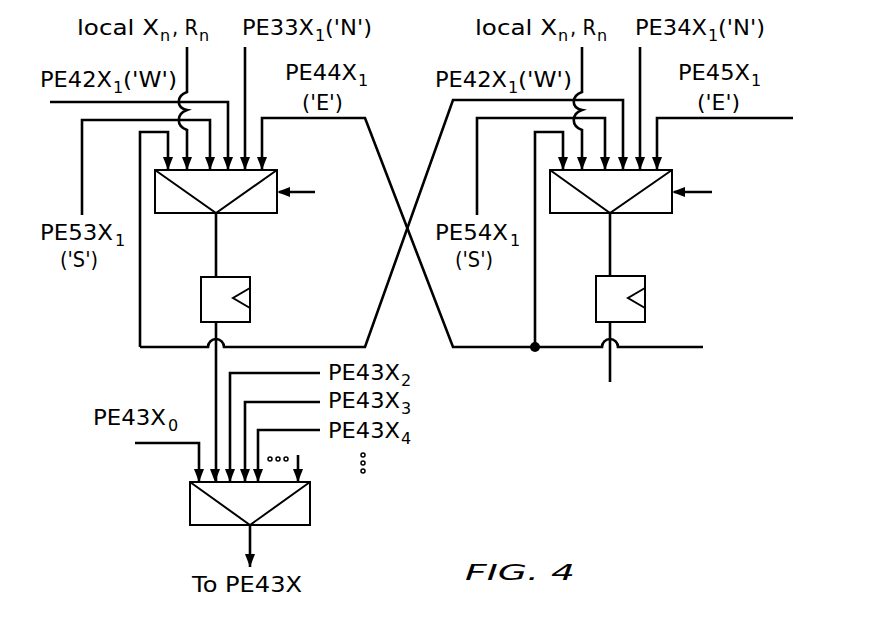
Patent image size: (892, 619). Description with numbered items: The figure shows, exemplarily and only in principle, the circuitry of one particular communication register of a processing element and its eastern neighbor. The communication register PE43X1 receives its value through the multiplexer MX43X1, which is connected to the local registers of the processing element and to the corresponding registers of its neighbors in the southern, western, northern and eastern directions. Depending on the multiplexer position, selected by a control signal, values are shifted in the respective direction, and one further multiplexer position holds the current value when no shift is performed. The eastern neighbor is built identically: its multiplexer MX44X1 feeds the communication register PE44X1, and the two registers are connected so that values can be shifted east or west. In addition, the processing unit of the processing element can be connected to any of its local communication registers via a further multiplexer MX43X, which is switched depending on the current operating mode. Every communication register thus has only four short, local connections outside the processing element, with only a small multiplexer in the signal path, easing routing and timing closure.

The multiplexer MX43X1 is at (270, 223).
The communication register PE43X1 is at (271, 299).
The multiplexer MX44X1 is at (666, 223).
The communication register PE44X1 is at (666, 299).
The further multiplexer MX43X is at (273, 524).